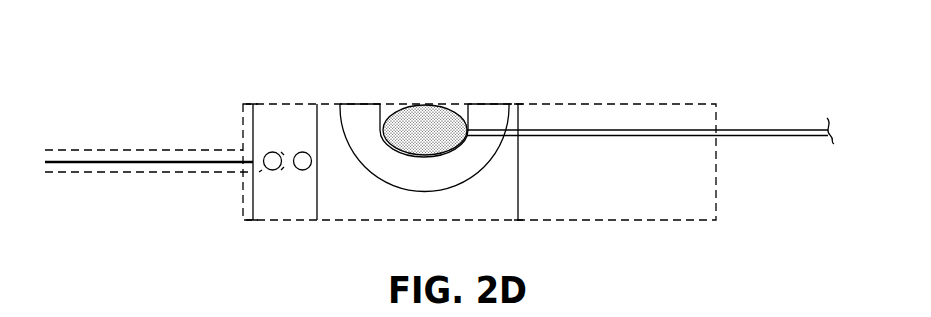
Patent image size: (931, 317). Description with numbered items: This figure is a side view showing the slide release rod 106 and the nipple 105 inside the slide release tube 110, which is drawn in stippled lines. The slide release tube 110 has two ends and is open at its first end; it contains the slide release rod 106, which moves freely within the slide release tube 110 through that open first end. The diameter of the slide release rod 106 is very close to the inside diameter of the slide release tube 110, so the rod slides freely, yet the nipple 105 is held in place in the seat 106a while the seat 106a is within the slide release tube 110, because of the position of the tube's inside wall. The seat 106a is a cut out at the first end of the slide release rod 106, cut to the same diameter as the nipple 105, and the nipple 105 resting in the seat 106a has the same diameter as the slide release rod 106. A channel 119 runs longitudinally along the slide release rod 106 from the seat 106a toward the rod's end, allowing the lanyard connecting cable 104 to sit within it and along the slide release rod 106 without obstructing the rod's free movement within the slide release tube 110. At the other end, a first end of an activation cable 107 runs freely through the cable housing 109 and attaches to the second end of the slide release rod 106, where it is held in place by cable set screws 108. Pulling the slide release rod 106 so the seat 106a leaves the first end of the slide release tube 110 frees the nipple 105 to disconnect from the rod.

The lanyard connecting cable 104 is at (763, 137).
The nipple 105 is at (401, 106).
The slide release rod 106 is at (473, 194).
The seat 106a is at (401, 160).
The activation cable 107 is at (216, 158).
The cable set screws 108 is at (299, 150).
The cable housing 109 is at (165, 174).
The slide release tube 110 is at (560, 101).
The channel 119 is at (516, 139).